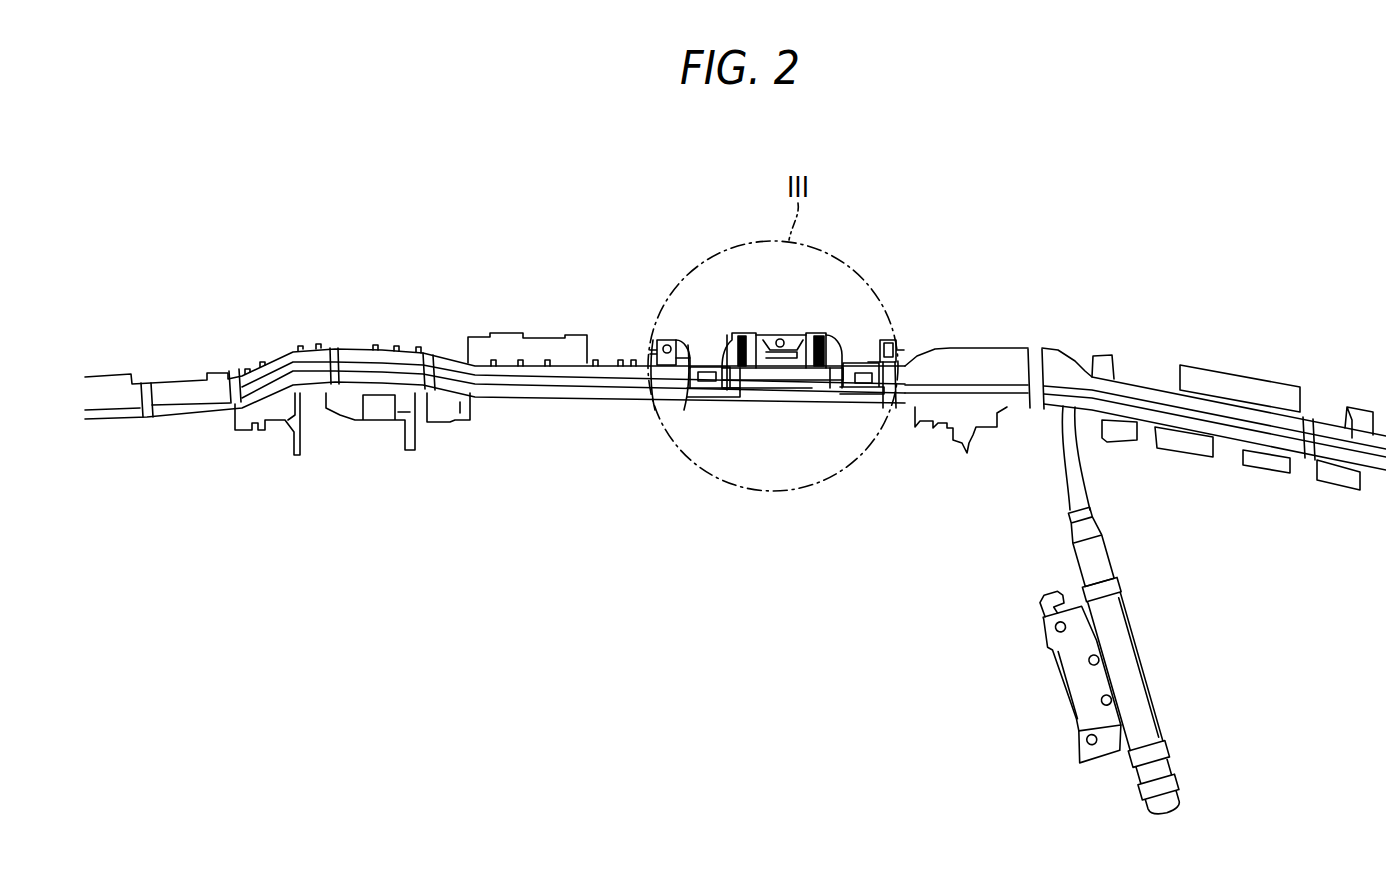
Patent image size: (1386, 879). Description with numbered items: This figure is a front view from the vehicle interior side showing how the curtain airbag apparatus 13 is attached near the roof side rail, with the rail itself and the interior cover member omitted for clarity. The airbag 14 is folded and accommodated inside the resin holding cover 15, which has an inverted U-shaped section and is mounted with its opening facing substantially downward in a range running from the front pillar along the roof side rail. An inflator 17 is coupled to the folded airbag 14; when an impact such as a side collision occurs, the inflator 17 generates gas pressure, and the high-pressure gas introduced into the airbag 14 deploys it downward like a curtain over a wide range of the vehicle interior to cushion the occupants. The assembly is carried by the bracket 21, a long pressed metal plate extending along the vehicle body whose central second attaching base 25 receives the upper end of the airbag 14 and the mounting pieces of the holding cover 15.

The curtain airbag apparatus 13 is at (1046, 310).
The airbag 14 is at (665, 418).
The holding cover 15 is at (612, 366).
The inflator 17 is at (1127, 668).
The bracket 21 is at (848, 336).
The second attaching base 25 is at (764, 337).